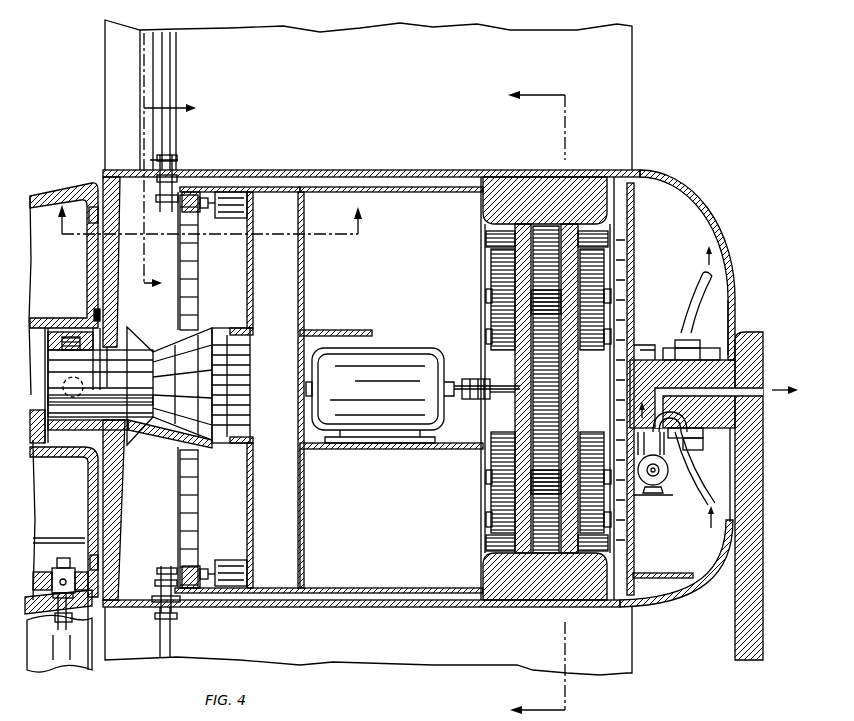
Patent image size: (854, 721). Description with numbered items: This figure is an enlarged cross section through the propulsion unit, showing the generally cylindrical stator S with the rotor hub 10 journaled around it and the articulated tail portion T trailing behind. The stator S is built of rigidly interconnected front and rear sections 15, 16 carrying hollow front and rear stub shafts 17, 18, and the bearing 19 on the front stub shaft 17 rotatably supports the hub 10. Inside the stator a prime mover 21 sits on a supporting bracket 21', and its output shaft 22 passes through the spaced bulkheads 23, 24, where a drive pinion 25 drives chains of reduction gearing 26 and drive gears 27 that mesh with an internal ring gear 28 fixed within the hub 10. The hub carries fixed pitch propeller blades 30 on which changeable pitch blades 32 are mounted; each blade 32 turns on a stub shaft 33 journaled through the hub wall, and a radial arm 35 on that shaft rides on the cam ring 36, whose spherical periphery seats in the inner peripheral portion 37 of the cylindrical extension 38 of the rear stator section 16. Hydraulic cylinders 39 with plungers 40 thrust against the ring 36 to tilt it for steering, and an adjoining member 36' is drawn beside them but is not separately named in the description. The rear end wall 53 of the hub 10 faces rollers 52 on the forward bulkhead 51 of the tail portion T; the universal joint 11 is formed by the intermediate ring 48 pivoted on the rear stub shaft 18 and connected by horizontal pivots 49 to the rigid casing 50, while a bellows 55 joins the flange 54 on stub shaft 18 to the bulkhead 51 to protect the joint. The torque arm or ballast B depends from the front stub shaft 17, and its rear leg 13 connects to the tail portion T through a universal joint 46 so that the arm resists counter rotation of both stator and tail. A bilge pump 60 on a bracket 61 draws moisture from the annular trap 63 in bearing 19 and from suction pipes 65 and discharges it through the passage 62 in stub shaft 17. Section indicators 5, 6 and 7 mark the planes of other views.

The central hub 10 is at (670, 170).
The universal joint 11 is at (70, 318).
The rear leg 13 is at (50, 672).
The front section 15 is at (636, 240).
The rear section 16 is at (437, 187).
The front stub shaft 17 is at (645, 355).
The rear stub shaft 18 is at (165, 447).
The bearing 19 is at (720, 330).
The prime mover 21 is at (390, 390).
The supporting bracket 21' is at (347, 518).
The output shaft 22 is at (497, 385).
The bulkhead 23 is at (512, 406).
The bulkhead 24 is at (572, 410).
The drive pinion 25 is at (558, 386).
The reduction gearing 26 is at (490, 268).
The drive gears 27 is at (498, 250).
The internal ring gear 28 is at (560, 205).
The fixed pitch propeller blades 30 is at (368, 347).
The changeable pitch blades 32 is at (163, 78).
The stub shaft 33 is at (177, 180).
The radial arm 35 is at (154, 578).
The cam ring 36 is at (195, 390).
The bearing block 36' is at (209, 390).
The inner peripheral portion 37 is at (215, 187).
The cylindrical extension 38 is at (205, 600).
The hydraulic cylinders 39 is at (248, 209).
The plungers 40 is at (205, 210).
The universal joint 46 is at (76, 558).
The intermediate ring 48 is at (95, 338).
The horizontal pivots 49 is at (86, 375).
The rigid casing 50 is at (70, 462).
The forward bulkhead 51 is at (88, 258).
The rollers 52 is at (116, 216).
The rear end wall 53 is at (113, 268).
The integral flange 54 is at (86, 497).
The bellows 55 is at (97, 300).
The bilge pump 60 is at (692, 482).
The bracket 61 is at (644, 500).
The passage 62 is at (763, 385).
The moisture collecting trap 63 is at (677, 340).
The suction pipes 65 is at (714, 287).
The section line 5- 5 is at (209, 219).
The section line 6- 6 is at (176, 162).
The section line 7- 7 is at (527, 406).
The tail portion T is at (66, 177).
The stator S is at (406, 202).
The torque arm B is at (735, 637).